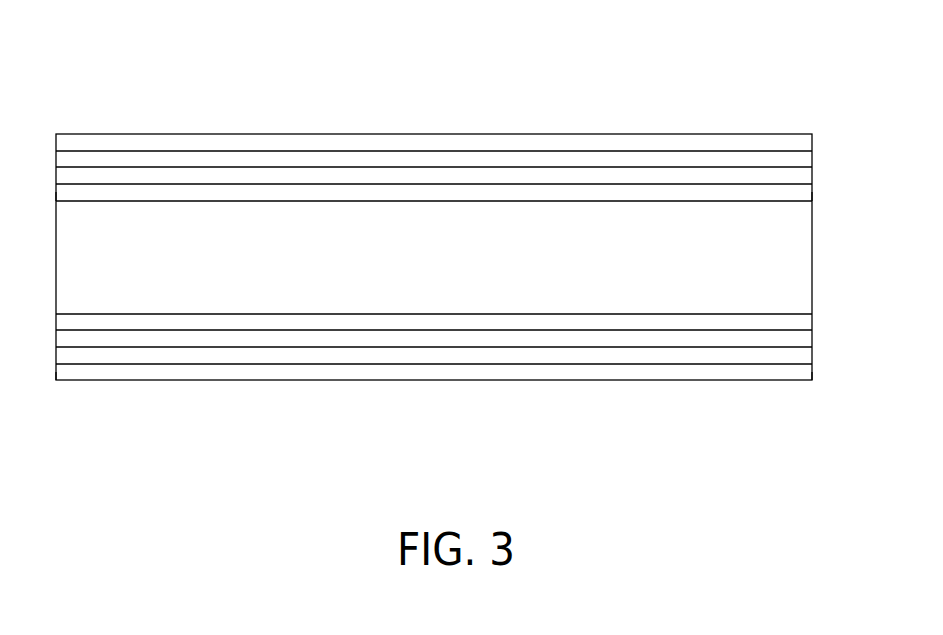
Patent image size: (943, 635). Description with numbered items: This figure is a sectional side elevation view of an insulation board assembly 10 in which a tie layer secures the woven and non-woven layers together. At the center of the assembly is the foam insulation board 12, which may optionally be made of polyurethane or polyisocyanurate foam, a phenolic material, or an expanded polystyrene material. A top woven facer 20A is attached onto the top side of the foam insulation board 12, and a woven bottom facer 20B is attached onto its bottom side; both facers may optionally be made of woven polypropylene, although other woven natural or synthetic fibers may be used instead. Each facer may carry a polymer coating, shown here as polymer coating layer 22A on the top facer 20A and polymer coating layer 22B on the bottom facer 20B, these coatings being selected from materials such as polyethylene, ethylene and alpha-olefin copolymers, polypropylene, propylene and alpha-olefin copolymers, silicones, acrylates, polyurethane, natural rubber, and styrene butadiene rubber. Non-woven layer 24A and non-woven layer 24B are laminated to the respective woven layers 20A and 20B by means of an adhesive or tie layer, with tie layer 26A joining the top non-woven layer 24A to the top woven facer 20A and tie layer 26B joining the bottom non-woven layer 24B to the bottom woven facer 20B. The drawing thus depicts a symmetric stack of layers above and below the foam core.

The insulation board assembly 10 is at (435, 75).
The foam insulation board 12 is at (178, 223).
The top woven facer 20A is at (512, 160).
The polymer coating layer 22A is at (583, 143).
The non-woven layer 24A is at (682, 197).
The tie layer 26A is at (635, 177).
The woven bottom facer 20B is at (627, 355).
The polymer coating layer 22B is at (557, 372).
The non-woven layer 24B is at (737, 325).
The tie layer 26B is at (680, 337).